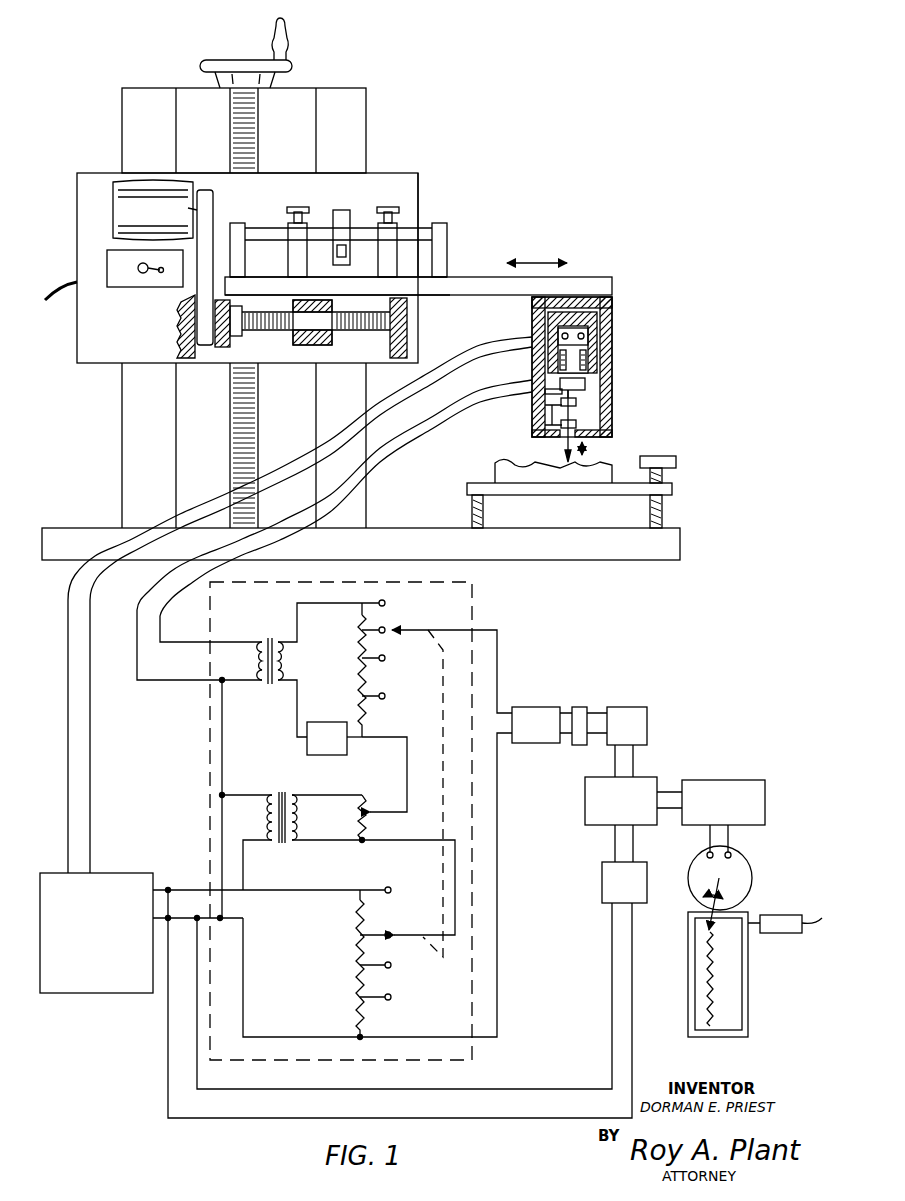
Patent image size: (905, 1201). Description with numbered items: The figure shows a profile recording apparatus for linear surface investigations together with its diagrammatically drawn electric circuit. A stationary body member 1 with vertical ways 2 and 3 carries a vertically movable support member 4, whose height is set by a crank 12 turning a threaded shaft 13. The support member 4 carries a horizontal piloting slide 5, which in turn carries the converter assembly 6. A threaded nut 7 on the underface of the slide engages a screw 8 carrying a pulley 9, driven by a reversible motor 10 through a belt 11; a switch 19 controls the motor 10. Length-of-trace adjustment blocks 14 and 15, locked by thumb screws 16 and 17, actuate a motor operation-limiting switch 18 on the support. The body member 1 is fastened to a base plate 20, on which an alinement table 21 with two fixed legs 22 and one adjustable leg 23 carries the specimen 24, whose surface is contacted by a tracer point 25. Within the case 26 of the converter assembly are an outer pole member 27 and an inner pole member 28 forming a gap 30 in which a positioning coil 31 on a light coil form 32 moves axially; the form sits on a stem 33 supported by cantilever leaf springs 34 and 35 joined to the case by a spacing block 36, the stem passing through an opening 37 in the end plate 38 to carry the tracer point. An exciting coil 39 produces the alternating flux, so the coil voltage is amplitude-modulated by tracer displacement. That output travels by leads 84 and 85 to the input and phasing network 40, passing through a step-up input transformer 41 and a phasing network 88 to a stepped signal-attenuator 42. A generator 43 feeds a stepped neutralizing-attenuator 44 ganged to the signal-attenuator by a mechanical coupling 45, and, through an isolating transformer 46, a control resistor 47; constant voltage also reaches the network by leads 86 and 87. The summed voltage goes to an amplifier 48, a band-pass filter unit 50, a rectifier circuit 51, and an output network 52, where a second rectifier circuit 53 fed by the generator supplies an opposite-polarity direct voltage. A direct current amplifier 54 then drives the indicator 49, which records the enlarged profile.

The stationary body member 1 is at (302, 117).
The vertical way 2 is at (153, 100).
The vertical way 3 is at (352, 123).
The support member 4 is at (387, 250).
The horizontal piloting slide 5 is at (457, 288).
The converter assembly 6 is at (612, 298).
The threaded nut 7 is at (315, 345).
The screw 8 is at (282, 335).
The pulley 9 is at (190, 360).
The reversible motor 10 is at (145, 203).
The belt 11 is at (205, 188).
The crank 12 is at (293, 65).
The threaded shaft 13 is at (258, 112).
The length-of-trace adjustment block 14 is at (413, 222).
The length-of-trace adjustment block 15 is at (453, 288).
The thumb screw 16 is at (298, 208).
The thumb screw 17 is at (397, 212).
The motor operation-limiting switch 18 is at (345, 218).
The switch 19 is at (138, 266).
The base plate 20 is at (615, 555).
The alinement table 21 is at (567, 487).
The fixed leg 22 is at (473, 512).
The adjustable leg 23 is at (650, 513).
The specimen 24 is at (495, 465).
The tracer point 25 is at (565, 460).
The case 26 is at (577, 405).
The outer pole member 27 is at (590, 345).
The inner pole member 28 is at (598, 352).
The gap 30 is at (585, 385).
The positioning coil 31 is at (590, 366).
The coil form 32 is at (580, 392).
The stem 33 is at (577, 425).
The cantilever leaf spring 34 is at (545, 392).
The cantilever leaf spring 35 is at (533, 437).
The spacing block 36 is at (545, 425).
The opening 37 is at (590, 446).
The end plate 38 is at (612, 437).
The exciting coil 39 is at (585, 332).
The input and phasing network 40 is at (210, 740).
The step-up input transformer 41 is at (270, 640).
The stepped signal-attenuator 42 is at (367, 620).
The generator 43 is at (87, 977).
The stepped neutralizing-attenuator 44 is at (363, 1012).
The mechanical coupling 45 is at (495, 630).
The isolating transformer 46 is at (283, 843).
The control resistor 47 is at (368, 818).
The amplifier 48 is at (520, 707).
The indicator 49 is at (687, 913).
The band-pass filter unit 50 is at (577, 707).
The rectifier circuit 51 is at (633, 708).
The output network 52 is at (647, 783).
The rectifier circuit 53 is at (622, 867).
The direct current amplifier 54 is at (742, 787).
The lead 84 is at (137, 625).
The lead 85 is at (163, 620).
The lead 86 is at (217, 883).
The lead 87 is at (215, 916).
The phasing network 88 is at (305, 740).